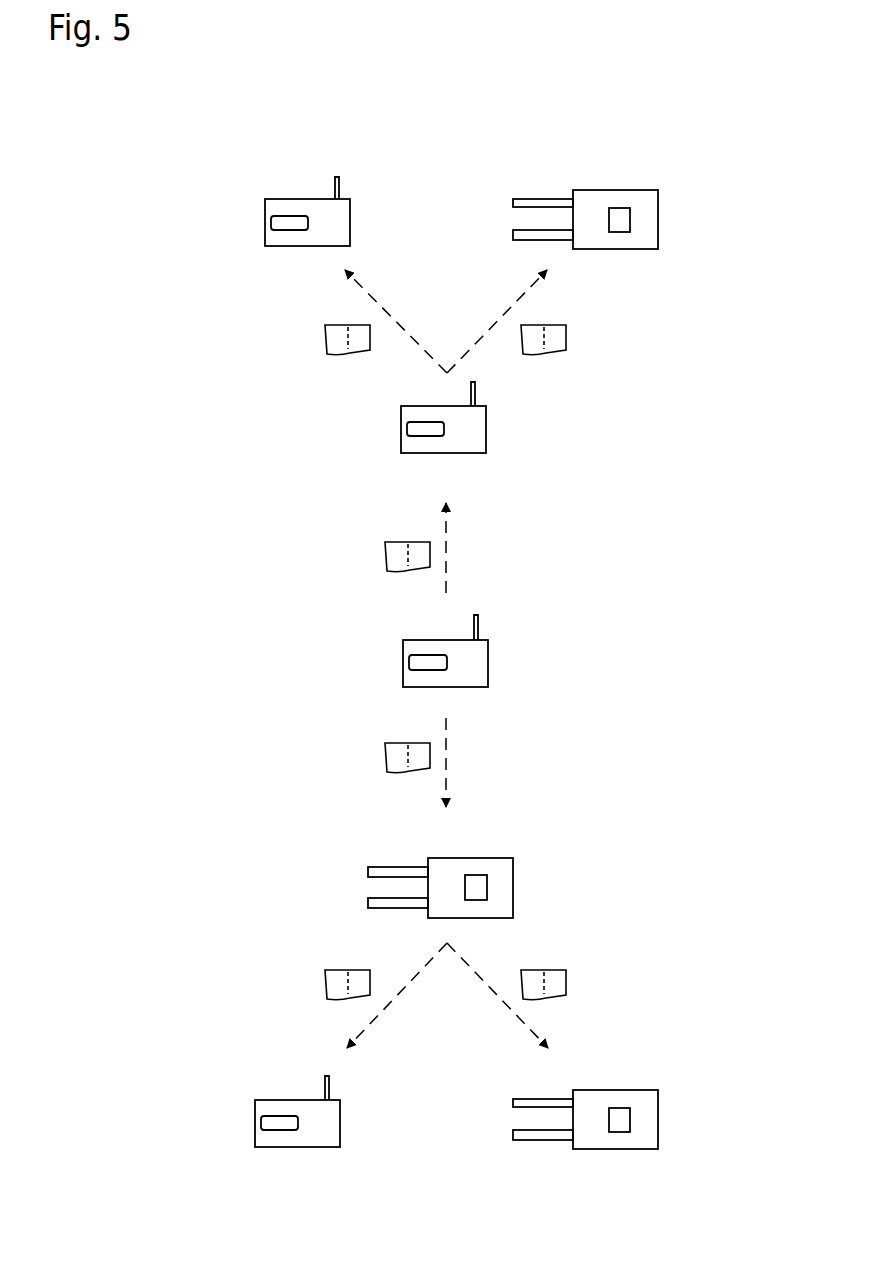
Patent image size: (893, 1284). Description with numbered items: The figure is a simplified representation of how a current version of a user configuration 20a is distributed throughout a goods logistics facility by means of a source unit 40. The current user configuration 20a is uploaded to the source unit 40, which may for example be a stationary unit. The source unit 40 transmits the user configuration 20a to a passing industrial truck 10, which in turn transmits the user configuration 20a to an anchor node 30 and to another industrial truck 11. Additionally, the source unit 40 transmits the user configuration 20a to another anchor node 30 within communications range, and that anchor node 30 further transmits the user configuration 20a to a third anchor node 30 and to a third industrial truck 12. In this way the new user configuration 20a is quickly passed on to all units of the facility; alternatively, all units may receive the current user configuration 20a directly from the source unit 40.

The industrial truck 10 is at (513, 887).
The industrial truck 11 is at (658, 1118).
The industrial truck 12 is at (658, 218).
The user configuration 20a is at (325, 337).
The anchor node 30 is at (265, 222).
The source unit 40 is at (403, 672).